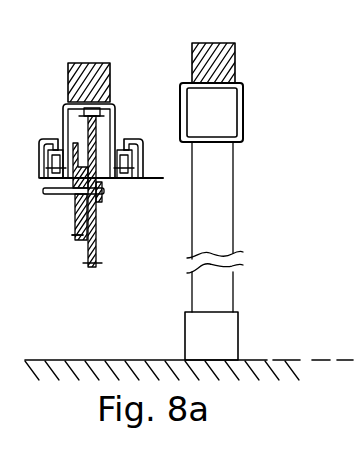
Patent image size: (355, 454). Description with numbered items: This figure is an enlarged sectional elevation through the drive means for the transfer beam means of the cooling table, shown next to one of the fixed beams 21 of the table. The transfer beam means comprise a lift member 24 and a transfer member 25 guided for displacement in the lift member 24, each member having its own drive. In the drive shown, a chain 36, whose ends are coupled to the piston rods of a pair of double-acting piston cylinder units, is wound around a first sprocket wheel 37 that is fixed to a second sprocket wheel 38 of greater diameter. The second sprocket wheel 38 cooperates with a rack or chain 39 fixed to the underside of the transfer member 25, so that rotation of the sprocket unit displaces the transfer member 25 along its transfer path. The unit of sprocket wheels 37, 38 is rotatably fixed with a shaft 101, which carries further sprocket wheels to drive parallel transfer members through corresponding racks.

The fixed beam 21 is at (228, 60).
The lift member 24 is at (38, 145).
The transfer member 25 is at (78, 79).
The chain 36 is at (77, 243).
The first sprocket wheel 37 is at (75, 208).
The second sprocket wheel 38 is at (95, 233).
The rack or chain 39 is at (113, 108).
The shaft 101 is at (107, 192).